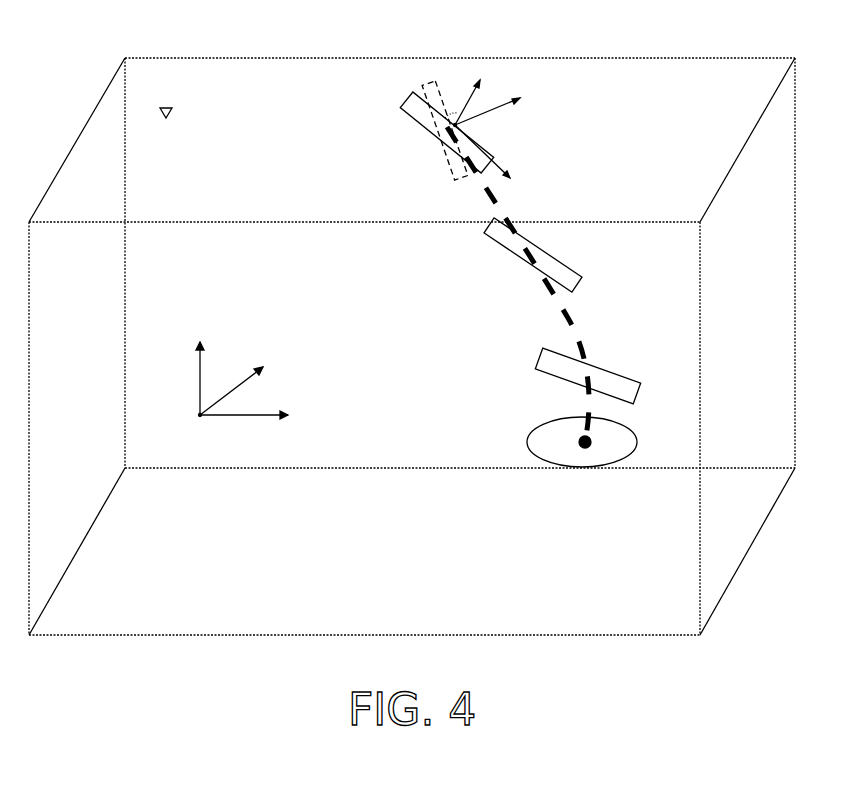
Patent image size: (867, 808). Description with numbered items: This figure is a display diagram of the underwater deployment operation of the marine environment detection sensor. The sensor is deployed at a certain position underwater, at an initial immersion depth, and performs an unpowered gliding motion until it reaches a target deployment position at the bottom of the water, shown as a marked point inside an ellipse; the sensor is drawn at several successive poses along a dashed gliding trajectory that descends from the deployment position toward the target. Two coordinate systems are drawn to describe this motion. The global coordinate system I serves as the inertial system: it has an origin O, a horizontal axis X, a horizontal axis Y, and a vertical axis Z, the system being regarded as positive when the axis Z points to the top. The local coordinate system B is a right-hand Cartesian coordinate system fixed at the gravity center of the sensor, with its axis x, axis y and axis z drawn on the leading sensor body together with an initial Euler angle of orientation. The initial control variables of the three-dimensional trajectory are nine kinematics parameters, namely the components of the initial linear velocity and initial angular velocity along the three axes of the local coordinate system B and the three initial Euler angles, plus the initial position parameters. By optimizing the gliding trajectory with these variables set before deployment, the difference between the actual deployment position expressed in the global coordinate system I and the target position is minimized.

The local coordinate system B is at (446, 130).
The global coordinate system I is at (212, 389).
The local coordinate axis x is at (488, 158).
The local coordinate axis y is at (492, 111).
The local coordinate axis z is at (473, 97).
The global coordinate axis X is at (244, 431).
The global coordinate axis Y is at (231, 370).
The global coordinate axis Z is at (177, 376).
The origin of the global coordinate system O is at (192, 424).